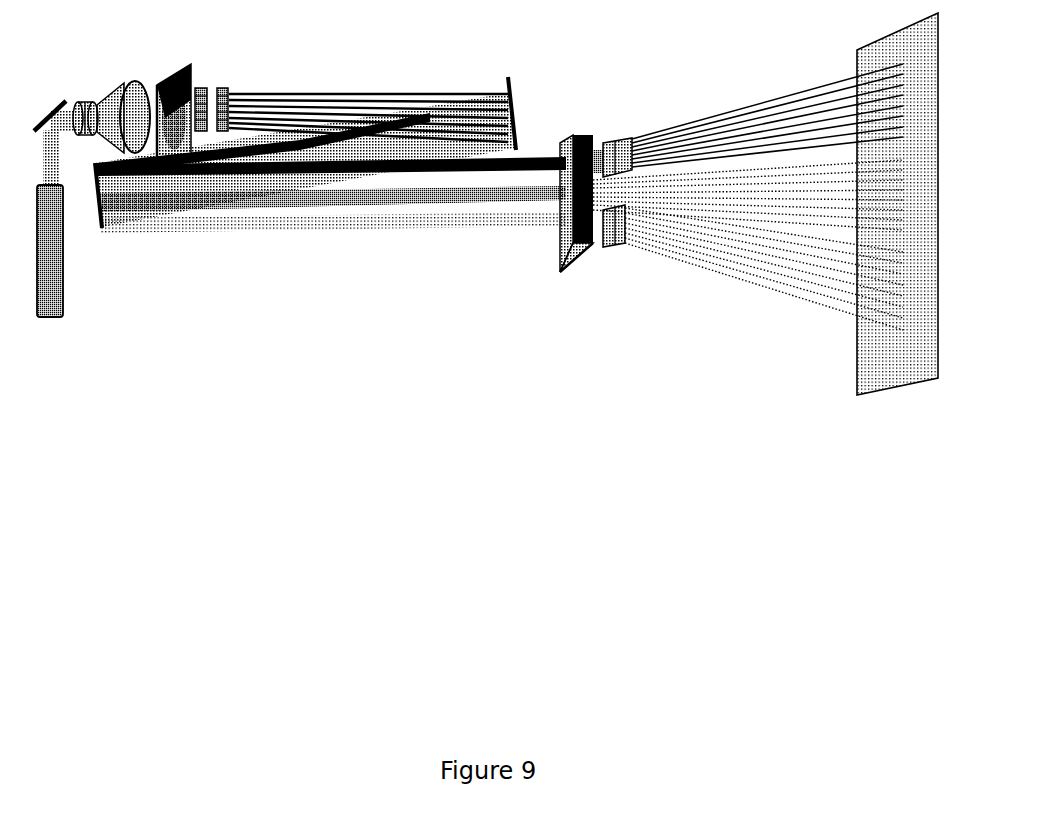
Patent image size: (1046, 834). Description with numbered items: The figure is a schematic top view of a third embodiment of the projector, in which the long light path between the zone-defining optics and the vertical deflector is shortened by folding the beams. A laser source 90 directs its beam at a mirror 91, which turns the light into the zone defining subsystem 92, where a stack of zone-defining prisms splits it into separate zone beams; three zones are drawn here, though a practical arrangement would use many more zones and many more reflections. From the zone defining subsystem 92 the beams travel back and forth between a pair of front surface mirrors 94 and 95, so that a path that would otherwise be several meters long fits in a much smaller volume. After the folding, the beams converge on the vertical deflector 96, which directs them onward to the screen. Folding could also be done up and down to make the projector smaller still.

The laser 90 is at (63, 223).
The mirror 91 is at (51, 115).
The beam shaping optics 92 is at (232, 66).
The mirror 94 is at (516, 92).
The mirror 95 is at (103, 228).
The beam splitter assembly 96 is at (596, 206).